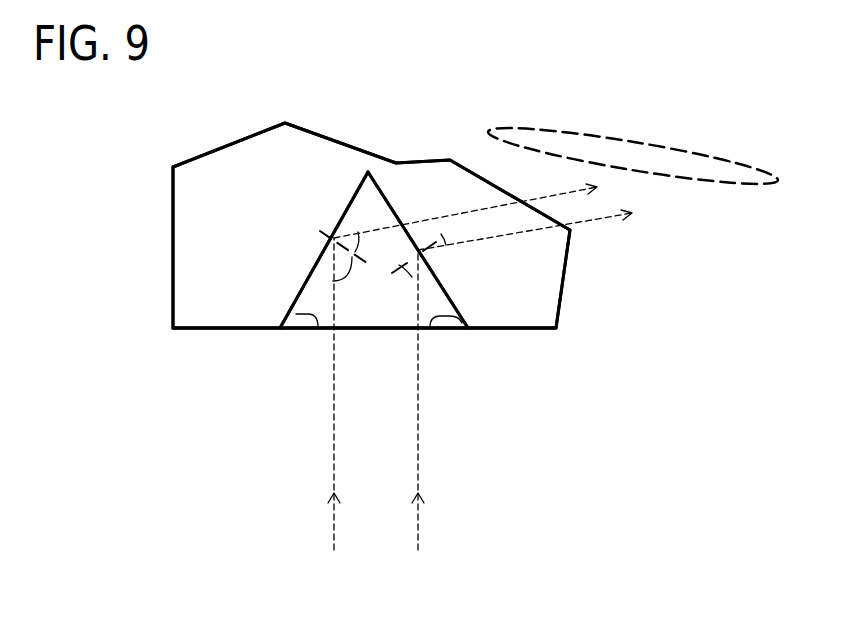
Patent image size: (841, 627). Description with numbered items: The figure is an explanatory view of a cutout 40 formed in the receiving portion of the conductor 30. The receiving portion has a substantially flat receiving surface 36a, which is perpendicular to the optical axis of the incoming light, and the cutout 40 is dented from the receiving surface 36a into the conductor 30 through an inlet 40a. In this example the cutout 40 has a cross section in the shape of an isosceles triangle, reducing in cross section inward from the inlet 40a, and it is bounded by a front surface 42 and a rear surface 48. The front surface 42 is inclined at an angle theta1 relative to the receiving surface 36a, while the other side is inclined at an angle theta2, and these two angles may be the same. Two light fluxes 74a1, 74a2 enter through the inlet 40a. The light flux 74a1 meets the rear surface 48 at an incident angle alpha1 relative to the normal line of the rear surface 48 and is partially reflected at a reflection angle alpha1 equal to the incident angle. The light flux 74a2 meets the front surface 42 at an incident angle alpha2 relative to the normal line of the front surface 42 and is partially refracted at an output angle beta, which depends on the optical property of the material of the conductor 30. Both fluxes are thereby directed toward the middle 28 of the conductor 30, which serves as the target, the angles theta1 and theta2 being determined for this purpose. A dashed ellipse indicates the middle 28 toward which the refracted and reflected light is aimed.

The conductor 30 is at (483, 82).
The middle 28 is at (582, 132).
The cutout 40 is at (245, 153).
The inlet 40a is at (394, 295).
The front surface 42 is at (382, 193).
The rear surface 48 is at (327, 245).
The receiving surface 36a is at (512, 328).
The light flux 74a1 is at (333, 454).
The light flux 74a2 is at (418, 454).
The incident angle and reflection angle alpha1 is at (362, 232).
The incident angle alpha2 is at (412, 277).
The output angle beta is at (447, 237).
The angle theta1 is at (430, 327).
The angle theta2 is at (318, 327).